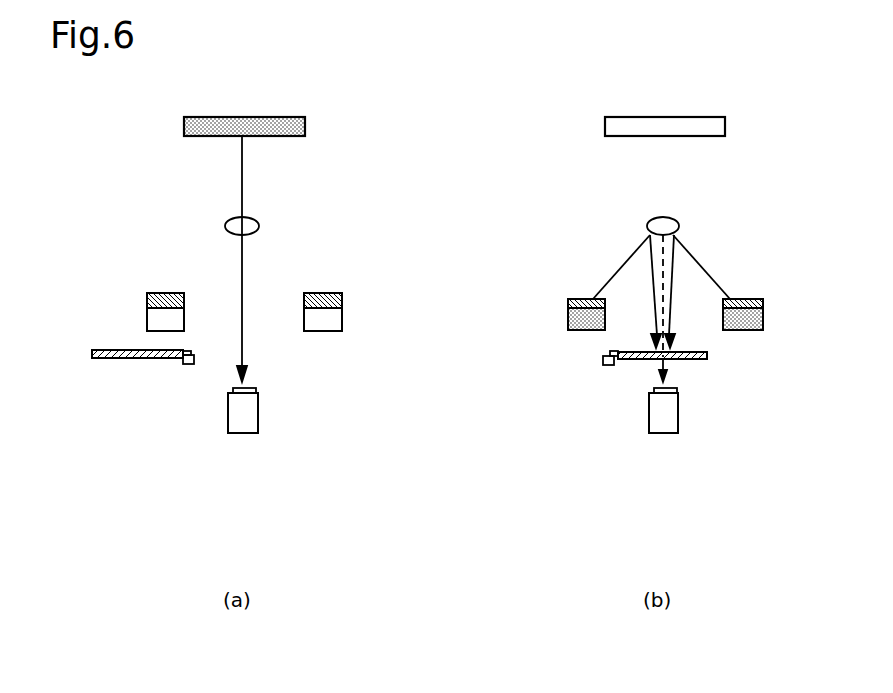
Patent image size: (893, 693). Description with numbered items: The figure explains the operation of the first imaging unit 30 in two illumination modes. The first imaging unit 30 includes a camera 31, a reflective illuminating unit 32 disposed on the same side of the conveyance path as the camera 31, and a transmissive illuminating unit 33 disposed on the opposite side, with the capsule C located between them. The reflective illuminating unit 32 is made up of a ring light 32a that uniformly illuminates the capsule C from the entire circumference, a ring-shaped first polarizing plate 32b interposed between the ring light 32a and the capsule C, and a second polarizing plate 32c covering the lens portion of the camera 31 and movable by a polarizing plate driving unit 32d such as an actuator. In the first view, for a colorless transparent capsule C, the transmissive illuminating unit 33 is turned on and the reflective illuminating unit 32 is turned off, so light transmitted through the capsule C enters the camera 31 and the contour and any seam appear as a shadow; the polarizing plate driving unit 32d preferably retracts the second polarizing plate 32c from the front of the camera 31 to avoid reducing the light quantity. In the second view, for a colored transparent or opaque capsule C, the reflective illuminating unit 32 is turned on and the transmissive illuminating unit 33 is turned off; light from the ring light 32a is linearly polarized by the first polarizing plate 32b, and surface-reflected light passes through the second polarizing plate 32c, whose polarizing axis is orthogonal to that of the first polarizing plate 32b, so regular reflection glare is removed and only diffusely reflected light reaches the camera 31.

The first imaging unit 30 is at (204, 462).
The camera 31 is at (243, 420).
The reflective illuminating unit 32 is at (417, 322).
The ring light 32a is at (147, 325).
The first polarizing plate 32b is at (150, 300).
The second polarizing plate 32c is at (117, 359).
The polarizing plate driving unit 32d is at (190, 365).
The transmissive illuminating unit 33 is at (188, 121).
The capsule C is at (233, 224).